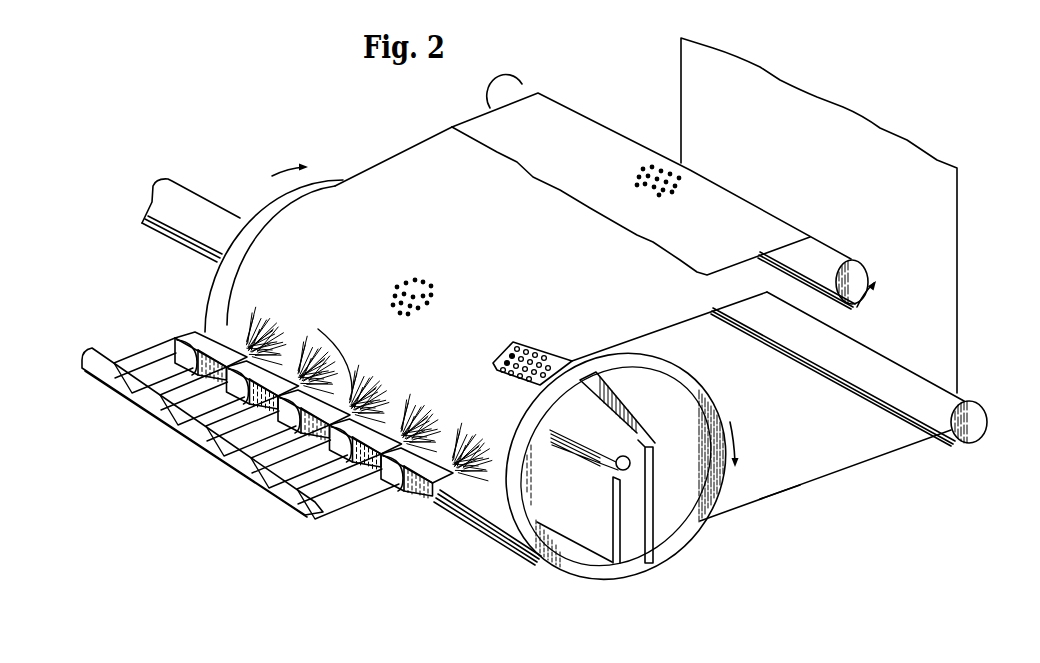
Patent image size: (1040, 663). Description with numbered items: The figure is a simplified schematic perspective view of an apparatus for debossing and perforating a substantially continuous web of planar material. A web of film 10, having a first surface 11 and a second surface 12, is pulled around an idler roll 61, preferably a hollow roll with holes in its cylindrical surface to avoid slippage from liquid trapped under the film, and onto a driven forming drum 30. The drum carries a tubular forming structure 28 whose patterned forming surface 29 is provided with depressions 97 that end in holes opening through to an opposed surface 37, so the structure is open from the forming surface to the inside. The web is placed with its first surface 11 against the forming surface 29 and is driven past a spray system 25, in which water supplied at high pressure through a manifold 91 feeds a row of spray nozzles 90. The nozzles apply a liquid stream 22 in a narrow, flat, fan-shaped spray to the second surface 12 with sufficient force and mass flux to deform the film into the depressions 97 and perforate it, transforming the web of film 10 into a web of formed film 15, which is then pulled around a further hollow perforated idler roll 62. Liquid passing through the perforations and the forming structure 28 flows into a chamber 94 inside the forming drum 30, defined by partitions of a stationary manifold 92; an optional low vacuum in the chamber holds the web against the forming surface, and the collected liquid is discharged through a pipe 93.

The web of film 10 is at (853, 452).
The first surface 11 is at (809, 424).
The second surface 12 is at (781, 470).
The web of formed film 15 is at (422, 163).
The liquid stream 22 is at (266, 338).
The spray system 25 is at (287, 447).
The tubular forming structure 28 is at (608, 573).
The patterned forming surface 29 is at (536, 343).
The forming drum 30 is at (688, 569).
The opposed surface 37 is at (570, 552).
The idler roll 61 is at (975, 414).
The idler roll 62 is at (512, 86).
The spray nozzles 90 is at (193, 338).
The manifold 91 is at (195, 432).
The stationary manifold 92 is at (618, 545).
The pipe 93 is at (177, 190).
The chamber 94 is at (566, 508).
The depressions 97 is at (547, 357).